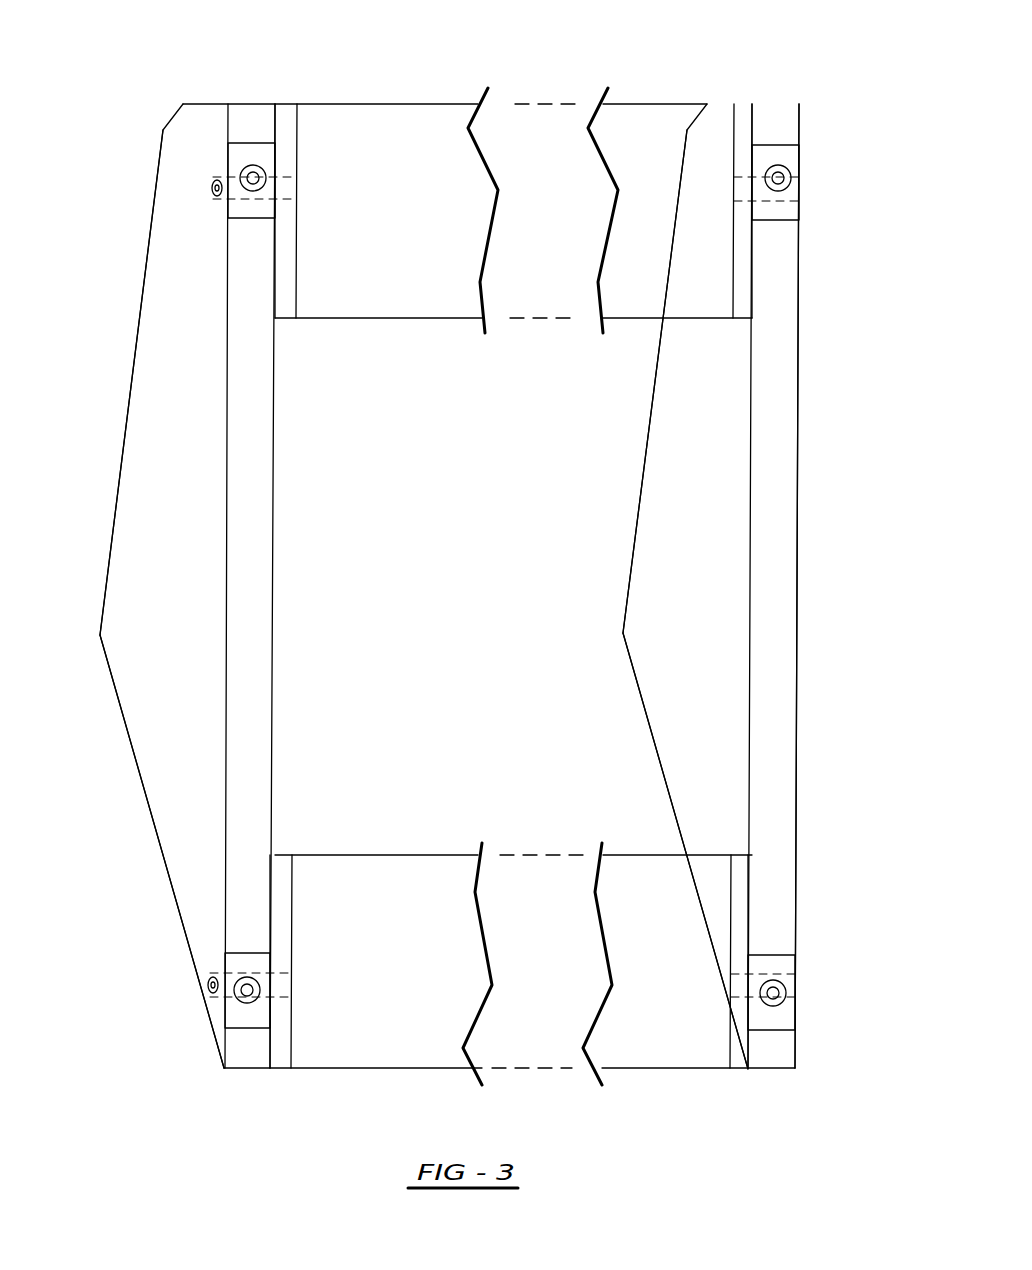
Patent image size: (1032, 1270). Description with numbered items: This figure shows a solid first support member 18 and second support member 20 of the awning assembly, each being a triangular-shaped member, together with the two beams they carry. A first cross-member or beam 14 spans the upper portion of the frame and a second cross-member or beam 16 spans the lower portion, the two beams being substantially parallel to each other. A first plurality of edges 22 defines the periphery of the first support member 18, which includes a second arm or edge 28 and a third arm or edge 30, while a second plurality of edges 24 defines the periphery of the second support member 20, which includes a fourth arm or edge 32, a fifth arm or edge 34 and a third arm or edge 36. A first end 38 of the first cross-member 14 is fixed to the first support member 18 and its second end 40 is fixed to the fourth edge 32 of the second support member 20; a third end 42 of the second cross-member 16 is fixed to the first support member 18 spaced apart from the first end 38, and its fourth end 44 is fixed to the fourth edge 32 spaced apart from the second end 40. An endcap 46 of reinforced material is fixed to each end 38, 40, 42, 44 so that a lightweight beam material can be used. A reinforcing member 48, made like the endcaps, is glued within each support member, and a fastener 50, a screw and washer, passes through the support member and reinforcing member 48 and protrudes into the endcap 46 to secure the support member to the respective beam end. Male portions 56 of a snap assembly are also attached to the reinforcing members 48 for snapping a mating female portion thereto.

The first cross-member or beam 14 is at (407, 254).
The second cross-member or beam 16 is at (403, 886).
The first support member 18 is at (190, 803).
The second support member 20 is at (699, 699).
The first plurality of edges 22 is at (247, 506).
The second plurality of edges 24 is at (644, 690).
The second arm or edge 28 is at (122, 432).
The third arm or edge 30 is at (125, 738).
The fourth arm or edge 32 is at (777, 435).
The fifth arm or edge 34 is at (644, 404).
The third arm or edge 36 is at (659, 763).
The first end 38 is at (287, 126).
The second end 40 is at (735, 150).
The third end 42 is at (277, 1059).
The fourth end 44 is at (744, 1045).
The endcap 46 is at (283, 110).
The reinforcing member 48 is at (231, 155).
The fastener 50 is at (212, 204).
The male portion 56 is at (266, 180).